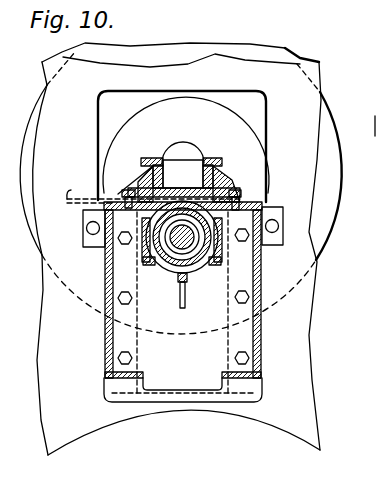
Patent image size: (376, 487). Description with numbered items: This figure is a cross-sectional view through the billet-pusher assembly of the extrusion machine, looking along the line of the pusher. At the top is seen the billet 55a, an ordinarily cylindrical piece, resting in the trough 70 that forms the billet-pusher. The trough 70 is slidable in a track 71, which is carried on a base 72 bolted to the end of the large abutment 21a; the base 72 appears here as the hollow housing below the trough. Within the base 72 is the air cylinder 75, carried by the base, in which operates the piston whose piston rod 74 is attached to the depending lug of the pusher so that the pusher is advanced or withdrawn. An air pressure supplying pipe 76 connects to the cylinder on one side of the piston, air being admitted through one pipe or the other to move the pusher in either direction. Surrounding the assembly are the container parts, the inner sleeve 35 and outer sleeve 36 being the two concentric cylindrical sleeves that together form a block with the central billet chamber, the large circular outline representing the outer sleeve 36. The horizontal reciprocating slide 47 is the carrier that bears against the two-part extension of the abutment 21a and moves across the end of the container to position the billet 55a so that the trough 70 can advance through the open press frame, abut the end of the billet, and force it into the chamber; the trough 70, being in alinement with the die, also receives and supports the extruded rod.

The large abutment 21a is at (306, 132).
The outer sleeve 36 is at (336, 216).
The horizontal reciprocating slide 47 is at (362, 112).
The inner sleeve 35 is at (183, 146).
The billet 55a is at (181, 154).
The trough 70 is at (180, 185).
The track 71 is at (217, 187).
The base 72 is at (106, 350).
The piston rod 74 is at (200, 268).
The air cylinder 75 is at (168, 266).
The air pressure supplying pipe 76 is at (187, 306).